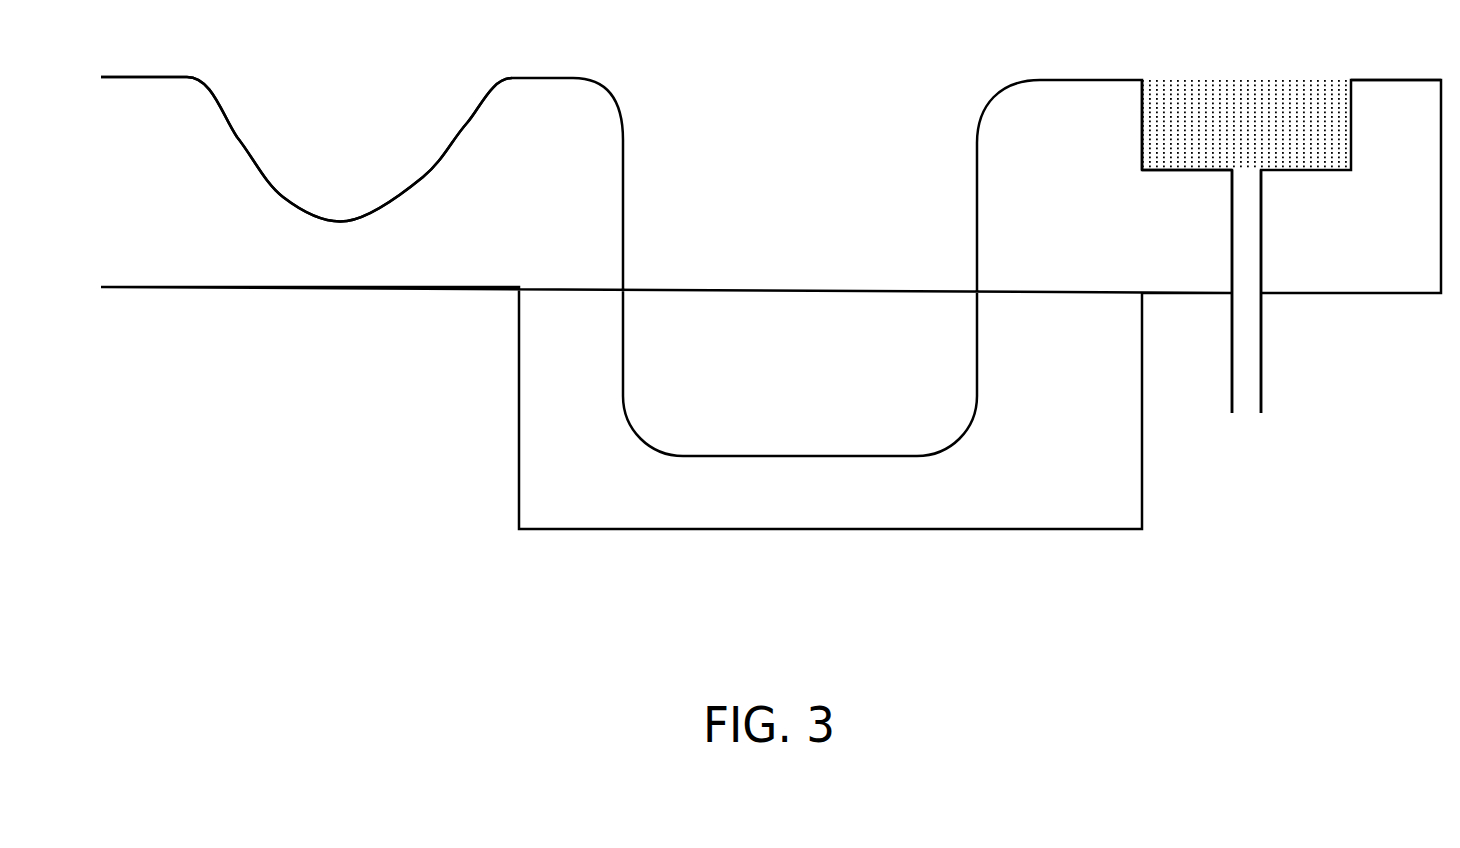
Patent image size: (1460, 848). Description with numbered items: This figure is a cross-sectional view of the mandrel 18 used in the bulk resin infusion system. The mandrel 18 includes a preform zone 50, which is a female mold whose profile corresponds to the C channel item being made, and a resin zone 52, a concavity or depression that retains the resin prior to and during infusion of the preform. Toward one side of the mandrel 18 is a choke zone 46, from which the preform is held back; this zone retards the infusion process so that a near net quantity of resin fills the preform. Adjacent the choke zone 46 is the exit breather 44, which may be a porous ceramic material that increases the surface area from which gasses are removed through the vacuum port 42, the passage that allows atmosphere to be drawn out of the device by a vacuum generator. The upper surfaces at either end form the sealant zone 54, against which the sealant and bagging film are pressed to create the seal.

The mandrel 18 is at (1113, 80).
The vacuum port 42 is at (1231, 352).
The exit breather 44 is at (1141, 143).
The choke zone 46 is at (1125, 90).
The preform zone 50 is at (800, 84).
The resin zone 52 is at (348, 70).
The sealant zone 54 is at (147, 74).